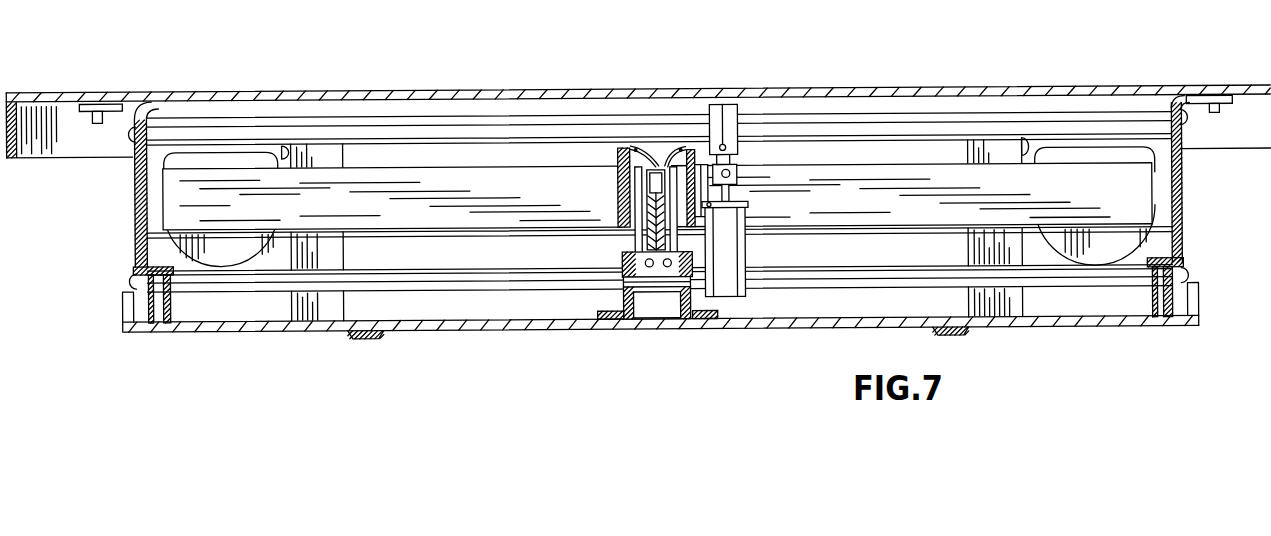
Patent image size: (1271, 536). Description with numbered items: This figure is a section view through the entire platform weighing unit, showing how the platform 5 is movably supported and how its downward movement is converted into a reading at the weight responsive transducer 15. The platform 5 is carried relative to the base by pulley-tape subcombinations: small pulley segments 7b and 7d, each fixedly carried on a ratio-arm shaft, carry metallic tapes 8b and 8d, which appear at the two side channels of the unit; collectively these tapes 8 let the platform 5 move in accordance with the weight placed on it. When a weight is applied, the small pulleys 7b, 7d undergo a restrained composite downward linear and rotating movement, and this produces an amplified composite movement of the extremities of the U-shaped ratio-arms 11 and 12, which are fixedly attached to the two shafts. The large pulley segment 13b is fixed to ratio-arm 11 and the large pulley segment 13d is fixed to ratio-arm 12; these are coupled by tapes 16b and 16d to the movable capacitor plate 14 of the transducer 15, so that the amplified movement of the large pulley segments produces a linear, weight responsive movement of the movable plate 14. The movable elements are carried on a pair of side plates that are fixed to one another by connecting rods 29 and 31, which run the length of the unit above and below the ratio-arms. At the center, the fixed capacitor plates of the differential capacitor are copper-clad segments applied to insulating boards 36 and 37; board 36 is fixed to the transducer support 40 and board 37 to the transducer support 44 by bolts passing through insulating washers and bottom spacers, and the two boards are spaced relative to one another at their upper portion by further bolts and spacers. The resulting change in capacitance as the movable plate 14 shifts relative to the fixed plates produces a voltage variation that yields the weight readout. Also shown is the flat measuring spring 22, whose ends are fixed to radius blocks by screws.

The platform 5 is at (249, 92).
The ratio-arm 11 is at (372, 185).
The ratio-arm 12 is at (873, 185).
The connecting rod 29 is at (443, 123).
The connecting rod 31 is at (433, 280).
The small pulley segment 7b is at (232, 252).
The small pulley segment 7d is at (1103, 238).
The metallic tape 8b is at (152, 234).
The metallic tape 8d is at (1180, 225).
The large pulley segment 13b is at (617, 152).
The large pulley segment 13d is at (692, 150).
The tape 16b is at (630, 146).
The tape 16d is at (673, 165).
The movable capacitor plate 14 is at (642, 210).
The insulating board 36 is at (642, 240).
The insulating board 37 is at (682, 240).
The transducer support 40 is at (597, 312).
The transducer support 44 is at (705, 312).
The flat measuring spring 22 is at (663, 297).
The weight responsive transducer 15 is at (708, 347).
The metallic tape 8 is at (653, 23).